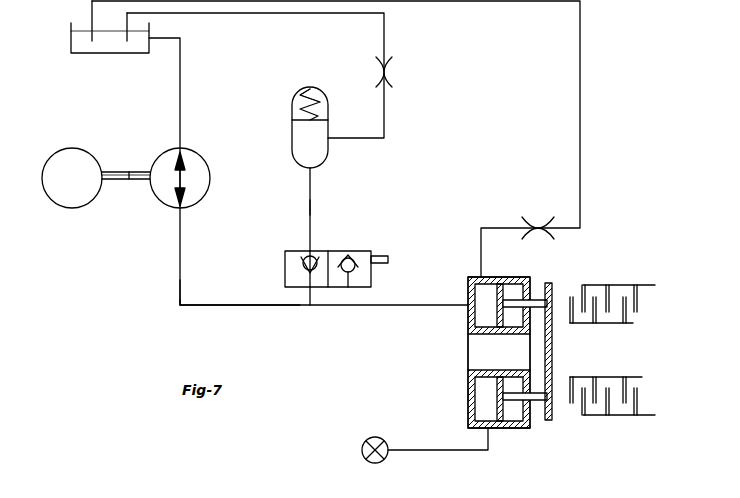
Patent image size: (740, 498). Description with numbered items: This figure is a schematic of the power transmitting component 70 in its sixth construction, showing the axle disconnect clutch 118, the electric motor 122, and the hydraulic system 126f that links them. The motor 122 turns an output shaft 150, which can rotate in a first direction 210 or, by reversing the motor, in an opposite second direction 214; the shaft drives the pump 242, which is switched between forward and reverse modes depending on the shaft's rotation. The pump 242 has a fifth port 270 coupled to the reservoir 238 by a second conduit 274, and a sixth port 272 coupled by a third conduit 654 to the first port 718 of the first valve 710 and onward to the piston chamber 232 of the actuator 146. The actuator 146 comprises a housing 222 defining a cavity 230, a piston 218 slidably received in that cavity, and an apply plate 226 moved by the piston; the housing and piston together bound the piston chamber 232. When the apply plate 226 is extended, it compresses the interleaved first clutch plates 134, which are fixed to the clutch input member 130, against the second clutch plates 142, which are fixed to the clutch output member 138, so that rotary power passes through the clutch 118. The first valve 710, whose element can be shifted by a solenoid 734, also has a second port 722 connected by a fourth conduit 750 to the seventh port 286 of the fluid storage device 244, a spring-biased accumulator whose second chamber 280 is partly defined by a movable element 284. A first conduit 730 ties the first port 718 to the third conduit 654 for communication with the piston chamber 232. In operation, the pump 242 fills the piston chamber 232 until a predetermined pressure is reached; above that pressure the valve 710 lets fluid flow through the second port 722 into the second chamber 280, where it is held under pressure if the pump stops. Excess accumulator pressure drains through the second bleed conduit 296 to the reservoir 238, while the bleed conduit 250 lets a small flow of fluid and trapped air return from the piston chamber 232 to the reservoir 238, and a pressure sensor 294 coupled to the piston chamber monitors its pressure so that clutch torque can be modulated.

The power transmitting component 70 is at (640, 86).
The second clutch 118 is at (633, 314).
The motor 122 is at (53, 205).
The hydraulic system 126f is at (165, 312).
The clutch input member 130 is at (647, 285).
The first clutch plates 134 is at (640, 303).
The clutch output member 138 is at (630, 325).
The second clutch plates 142 is at (622, 300).
The actuator 146 is at (458, 396).
The output shaft 150 is at (134, 166).
The first direction 210 is at (113, 196).
The second direction 214 is at (134, 164).
The piston 218 is at (493, 406).
The housing 222 is at (468, 378).
The apply plate 226 is at (553, 293).
The cavity 230 is at (507, 283).
The piston chamber 232 is at (490, 318).
The reservoir 238 is at (71, 34).
The pump 242 is at (156, 201).
The fluid storage device 244 is at (306, 84).
The bleed conduit 250 is at (580, 86).
The fifth port 270 is at (182, 152).
The sixth port 272 is at (183, 207).
The second conduit 274 is at (180, 68).
The second chamber 280 is at (306, 129).
The movable element 284 is at (318, 120).
The seventh port 286 is at (309, 168).
The pressure sensor 294 is at (362, 446).
The second bleed conduit 296 is at (384, 38).
The third conduit 654 is at (180, 282).
The first valve 710 is at (285, 269).
The first port 718 is at (309, 289).
The second port 722 is at (306, 251).
The first conduit 730 is at (311, 292).
The solenoid 734 is at (388, 259).
The fourth conduit 750 is at (310, 215).